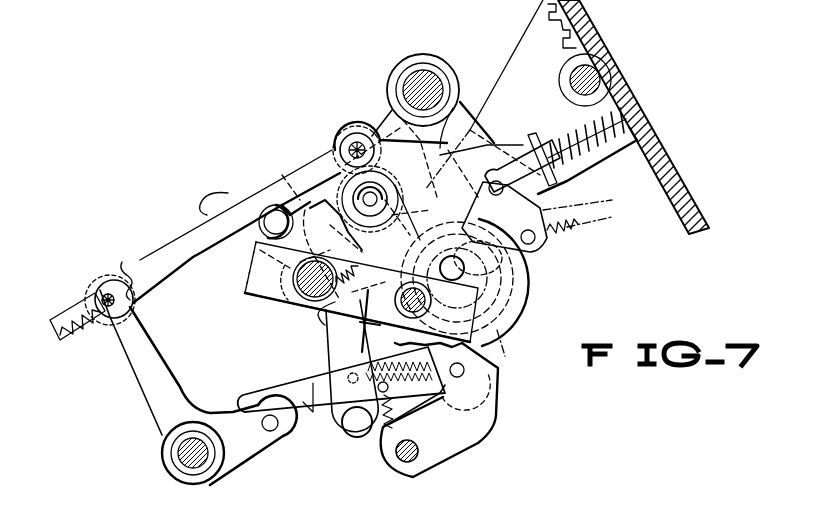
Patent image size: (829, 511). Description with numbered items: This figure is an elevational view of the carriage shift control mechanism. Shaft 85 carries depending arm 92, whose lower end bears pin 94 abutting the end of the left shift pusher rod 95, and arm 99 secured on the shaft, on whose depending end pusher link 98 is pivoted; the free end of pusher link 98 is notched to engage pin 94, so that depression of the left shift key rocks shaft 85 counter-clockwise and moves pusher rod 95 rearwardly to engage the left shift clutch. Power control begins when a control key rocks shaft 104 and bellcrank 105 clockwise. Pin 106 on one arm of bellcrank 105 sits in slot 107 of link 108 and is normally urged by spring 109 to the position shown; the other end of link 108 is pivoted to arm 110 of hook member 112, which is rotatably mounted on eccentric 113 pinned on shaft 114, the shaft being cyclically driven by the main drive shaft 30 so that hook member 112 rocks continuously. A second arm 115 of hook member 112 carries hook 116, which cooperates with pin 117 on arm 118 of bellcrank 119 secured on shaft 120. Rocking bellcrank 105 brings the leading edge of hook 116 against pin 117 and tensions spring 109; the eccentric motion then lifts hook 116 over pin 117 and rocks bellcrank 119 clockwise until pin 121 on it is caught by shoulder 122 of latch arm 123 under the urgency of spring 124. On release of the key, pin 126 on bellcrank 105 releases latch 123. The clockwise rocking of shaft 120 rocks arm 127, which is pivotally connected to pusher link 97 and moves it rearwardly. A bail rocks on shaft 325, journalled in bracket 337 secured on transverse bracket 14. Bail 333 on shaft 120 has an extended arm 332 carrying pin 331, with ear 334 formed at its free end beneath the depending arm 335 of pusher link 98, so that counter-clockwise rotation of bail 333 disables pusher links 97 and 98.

The transverse bracket 14 is at (612, 63).
The main drive shaft 30 is at (572, 80).
The shaft 85 is at (437, 84).
The depending arm 92 is at (483, 120).
The pin 94 is at (499, 195).
The left shift pusher rod 95 is at (568, 128).
The pusher link 97 is at (272, 178).
The pusher link 98 is at (502, 126).
The arm 99 is at (403, 126).
The shaft 104 is at (178, 455).
The bellcrank 105 is at (135, 369).
The pin 106 is at (108, 283).
The slot 107 is at (128, 260).
The link 108 is at (285, 170).
The spring 109 is at (80, 308).
The arm 110 is at (380, 131).
The hook member 112 is at (520, 305).
The eccentric 113 is at (510, 292).
The shaft 114 is at (458, 273).
The second arm 115 is at (380, 212).
The hook 116 is at (347, 201).
The pin 117 is at (333, 165).
The arm 118 is at (290, 177).
The bellcrank 119 is at (306, 320).
The shaft 120 is at (300, 300).
The pin 121 is at (356, 438).
The shoulder 122 is at (313, 417).
The latch arm 123 is at (342, 374).
The spring 124 is at (388, 440).
The pin 126 is at (272, 432).
The arm 127 is at (226, 205).
The shaft 325 is at (404, 463).
The pin 331 is at (426, 300).
The extended arm 332 is at (326, 320).
The bail 333 is at (246, 294).
The ear 334 is at (500, 322).
The depending rearwardly extended arm 335 is at (520, 258).
The bracket 337 is at (495, 391).